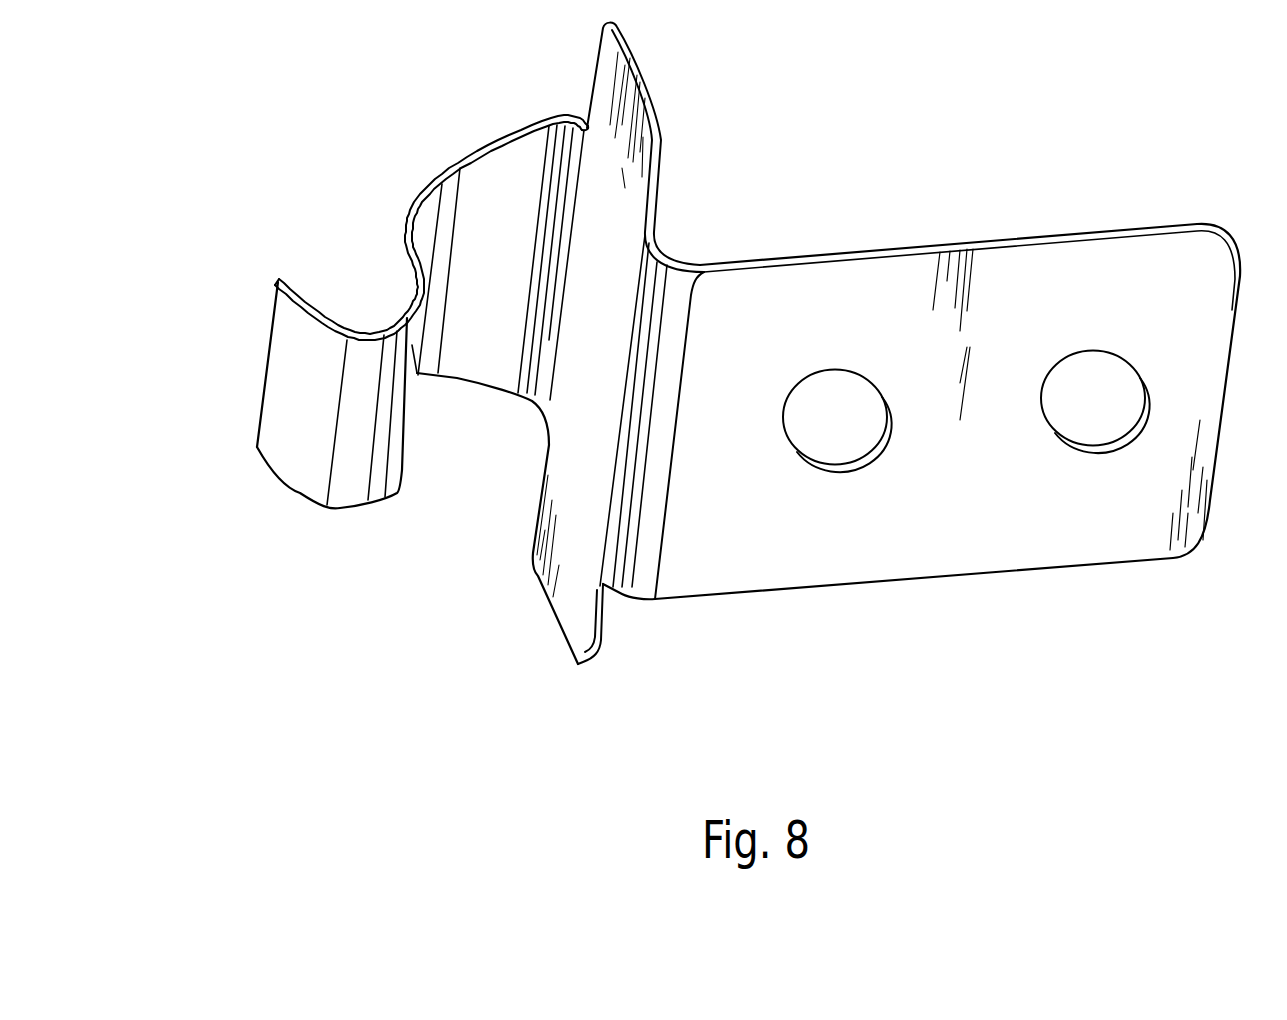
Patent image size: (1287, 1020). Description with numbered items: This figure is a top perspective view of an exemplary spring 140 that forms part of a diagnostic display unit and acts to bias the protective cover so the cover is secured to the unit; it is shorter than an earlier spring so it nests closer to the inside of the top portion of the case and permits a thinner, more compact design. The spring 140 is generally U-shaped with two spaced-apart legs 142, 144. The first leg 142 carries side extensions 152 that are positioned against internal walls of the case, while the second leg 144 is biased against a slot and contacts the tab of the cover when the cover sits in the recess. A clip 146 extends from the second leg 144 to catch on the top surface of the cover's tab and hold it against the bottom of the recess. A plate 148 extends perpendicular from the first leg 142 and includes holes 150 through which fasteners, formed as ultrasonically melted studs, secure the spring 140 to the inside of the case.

The spring 140 is at (945, 585).
The first leg 142 is at (622, 211).
The second leg 144 is at (401, 295).
The clip 146 is at (294, 390).
The plate 148 is at (1122, 270).
The holes 150 is at (842, 462).
The side extensions 152 is at (638, 98).